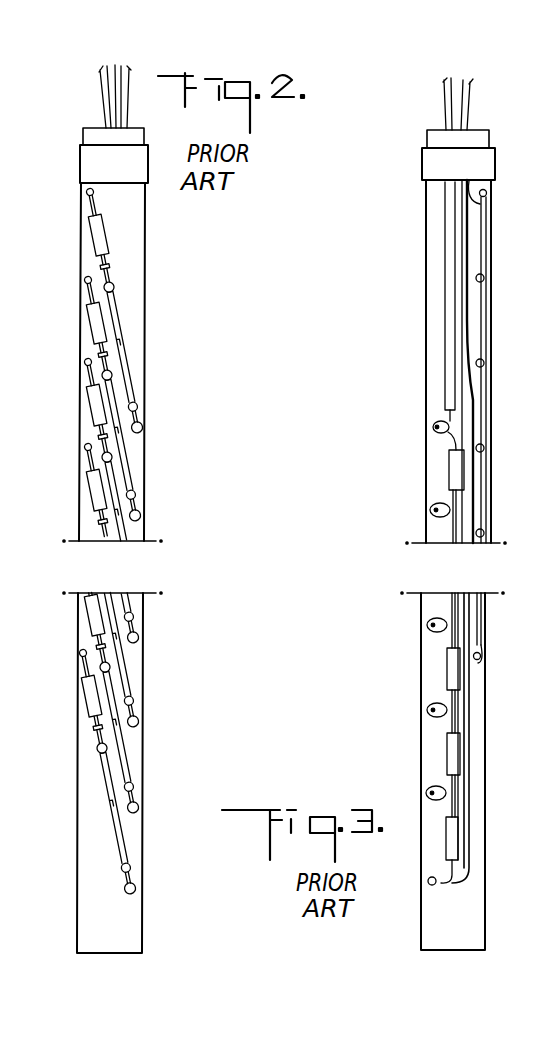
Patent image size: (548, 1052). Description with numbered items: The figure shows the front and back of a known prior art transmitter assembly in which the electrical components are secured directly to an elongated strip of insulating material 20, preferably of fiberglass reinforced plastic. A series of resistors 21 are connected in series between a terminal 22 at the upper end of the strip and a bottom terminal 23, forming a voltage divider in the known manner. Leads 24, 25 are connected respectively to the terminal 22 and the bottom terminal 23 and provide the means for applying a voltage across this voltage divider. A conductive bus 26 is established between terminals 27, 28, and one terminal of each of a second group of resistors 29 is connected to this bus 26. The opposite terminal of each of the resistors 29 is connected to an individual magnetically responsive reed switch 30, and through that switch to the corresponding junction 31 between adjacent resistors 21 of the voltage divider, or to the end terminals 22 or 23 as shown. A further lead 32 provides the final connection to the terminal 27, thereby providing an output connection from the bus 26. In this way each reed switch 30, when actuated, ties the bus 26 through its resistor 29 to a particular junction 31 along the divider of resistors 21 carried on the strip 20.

In FIG. 2, the elongated strip of insulating material 20 is at (143, 268).
In FIG. 3, the elongated strip of insulating material 20 is at (432, 263).
In FIG. 3, the resistors 21 is at (448, 470).
In FIG. 2, the terminal 22 is at (142, 427).
In FIG. 3, the terminal 22 is at (435, 427).
In FIG. 2, the bottom terminal 23 is at (137, 890).
In FIG. 3, the bottom terminal 23 is at (430, 886).
In FIG. 3, the lead 24 is at (452, 386).
In FIG. 3, the lead 25 is at (471, 342).
In FIG. 2, the conductive bus 26 is at (84, 281).
In FIG. 3, the conductive bus 26 is at (487, 240).
In FIG. 2, the terminal 27 is at (86, 193).
In FIG. 3, the terminal 27 is at (489, 195).
In FIG. 2, the terminal 28 is at (79, 654).
In FIG. 3, the terminal 28 is at (483, 656).
In FIG. 2, the resistors 29 is at (91, 238).
In FIG. 2, the reed switch 30 is at (123, 328).
In FIG. 2, the junctions 31 is at (141, 511).
In FIG. 3, the junctions 31 is at (430, 511).
In FIG. 3, the further lead 32 is at (471, 118).